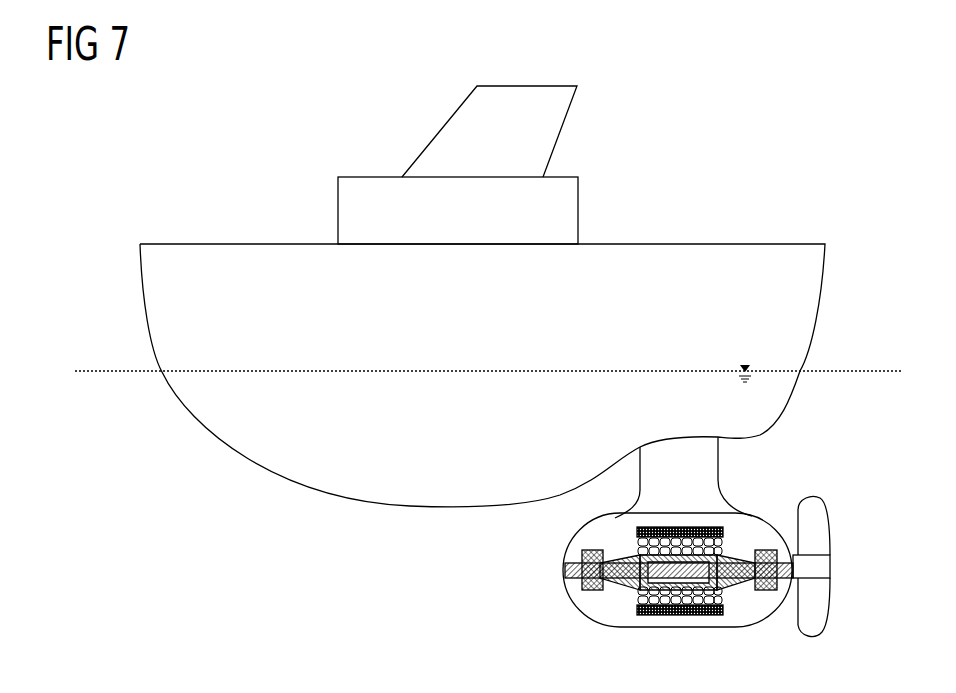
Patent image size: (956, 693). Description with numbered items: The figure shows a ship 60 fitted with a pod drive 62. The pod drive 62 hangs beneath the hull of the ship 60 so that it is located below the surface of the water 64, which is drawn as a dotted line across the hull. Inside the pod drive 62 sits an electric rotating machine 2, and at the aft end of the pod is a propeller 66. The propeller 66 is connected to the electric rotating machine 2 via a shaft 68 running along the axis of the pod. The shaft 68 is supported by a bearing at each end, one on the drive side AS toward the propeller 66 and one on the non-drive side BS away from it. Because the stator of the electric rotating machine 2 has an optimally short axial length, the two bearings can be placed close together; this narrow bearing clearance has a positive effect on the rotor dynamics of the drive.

The electric rotating machine 2 is at (612, 600).
The ship 60 is at (805, 292).
The pod drive 62 is at (536, 606).
The surface of the water 64 is at (864, 373).
The propeller 66 is at (820, 527).
The shaft 68 is at (718, 580).
The drive side AS is at (747, 527).
The non-drive side BS is at (602, 539).